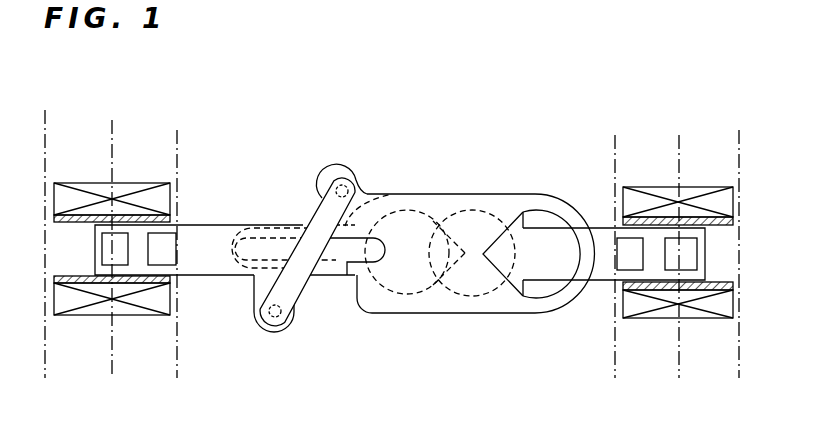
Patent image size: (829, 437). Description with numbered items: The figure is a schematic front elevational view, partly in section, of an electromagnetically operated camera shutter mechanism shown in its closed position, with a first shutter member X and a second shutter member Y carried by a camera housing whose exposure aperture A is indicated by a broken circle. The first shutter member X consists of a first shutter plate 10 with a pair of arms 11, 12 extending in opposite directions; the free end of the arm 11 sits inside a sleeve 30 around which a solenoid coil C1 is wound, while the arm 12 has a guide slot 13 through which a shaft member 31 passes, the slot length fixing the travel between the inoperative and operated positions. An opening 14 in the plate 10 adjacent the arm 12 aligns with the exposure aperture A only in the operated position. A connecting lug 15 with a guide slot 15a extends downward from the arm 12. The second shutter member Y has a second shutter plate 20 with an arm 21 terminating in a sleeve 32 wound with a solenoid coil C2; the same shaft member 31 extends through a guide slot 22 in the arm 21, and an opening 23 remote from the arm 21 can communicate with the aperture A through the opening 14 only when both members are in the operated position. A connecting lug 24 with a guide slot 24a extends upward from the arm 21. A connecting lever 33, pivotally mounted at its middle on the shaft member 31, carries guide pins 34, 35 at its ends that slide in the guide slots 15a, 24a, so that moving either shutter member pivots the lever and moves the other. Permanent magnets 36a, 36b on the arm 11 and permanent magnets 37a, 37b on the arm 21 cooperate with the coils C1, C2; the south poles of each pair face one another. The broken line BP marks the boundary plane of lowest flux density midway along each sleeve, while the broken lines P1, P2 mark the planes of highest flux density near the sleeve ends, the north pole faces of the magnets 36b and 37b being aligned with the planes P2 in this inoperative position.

The first shutter plate 10 is at (441, 205).
The arm 11 is at (588, 302).
The arm 12 is at (250, 233).
The guide slot 13 is at (275, 238).
The opening 14 is at (418, 300).
The connecting lug 15 is at (251, 302).
The guide slot 15a is at (275, 334).
The second shutter plate 20 is at (468, 312).
The arm 21 is at (195, 278).
The guide slot 22 is at (367, 318).
The opening 23 is at (528, 288).
The connecting lug 24 is at (327, 176).
The guide slot 24a is at (352, 178).
The sleeve 30 is at (720, 228).
The shaft member 31 is at (348, 264).
The sleeve 32 is at (70, 277).
The connecting lever 33 is at (302, 225).
The guide pin 34 is at (307, 262).
The guide pin 35 is at (362, 182).
The permanent magnet 36a is at (688, 262).
The permanent magnet 36b is at (627, 252).
The permanent magnet 37a is at (108, 258).
The permanent magnet 37b is at (163, 256).
The exposure aperture A is at (482, 210).
The boundary plane BP is at (113, 147).
The solenoid coil C1 is at (653, 187).
The solenoid coil C2 is at (90, 183).
The plane P1 is at (45, 335).
The plane P2 is at (178, 150).
The first shutter member X is at (550, 256).
The second shutter member Y is at (528, 195).